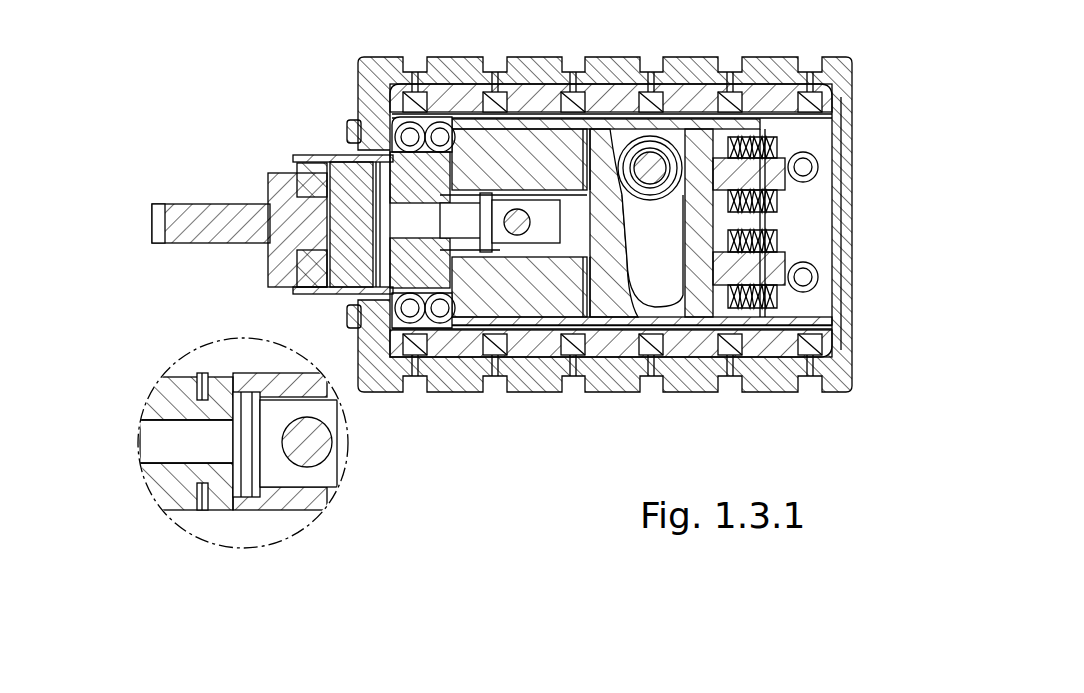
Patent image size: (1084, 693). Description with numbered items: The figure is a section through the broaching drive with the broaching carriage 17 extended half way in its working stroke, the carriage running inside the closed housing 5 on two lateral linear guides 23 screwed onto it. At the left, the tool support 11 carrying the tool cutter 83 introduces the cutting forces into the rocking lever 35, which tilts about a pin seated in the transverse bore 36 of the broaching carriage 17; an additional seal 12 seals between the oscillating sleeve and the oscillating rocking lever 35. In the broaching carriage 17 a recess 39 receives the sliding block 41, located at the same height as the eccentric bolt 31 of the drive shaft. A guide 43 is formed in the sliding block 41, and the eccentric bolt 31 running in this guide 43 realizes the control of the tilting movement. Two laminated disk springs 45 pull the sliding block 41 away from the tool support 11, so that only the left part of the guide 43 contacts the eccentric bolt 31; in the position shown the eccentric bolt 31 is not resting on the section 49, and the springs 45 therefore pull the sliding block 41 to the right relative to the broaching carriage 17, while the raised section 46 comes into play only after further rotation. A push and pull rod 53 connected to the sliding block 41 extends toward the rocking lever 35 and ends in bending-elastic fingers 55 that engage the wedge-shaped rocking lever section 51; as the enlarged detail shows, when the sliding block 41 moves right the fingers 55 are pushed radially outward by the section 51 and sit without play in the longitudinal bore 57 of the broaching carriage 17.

The closed housing 5 is at (850, 207).
The tool support 11 is at (207, 212).
The additional seal 12 is at (303, 157).
The broaching carriage 17 is at (532, 303).
The lateral linear guides 23 is at (708, 100).
The eccentric bolt 31 is at (664, 148).
The rocking lever 35 is at (430, 190).
The transverse bore 36 is at (378, 282).
The recess 39 is at (718, 150).
The sliding block 41 is at (695, 330).
The guide 43 is at (675, 312).
The laminated disk springs 45 is at (770, 148).
The raised section 46 is at (630, 307).
The section of the guide 49 is at (610, 145).
The rocking lever section 51 is at (227, 488).
The push and pull rod 53 is at (522, 195).
The fingers 55 is at (220, 502).
The longitudinal bore 57 is at (243, 373).
The tool cutter 83 is at (157, 220).